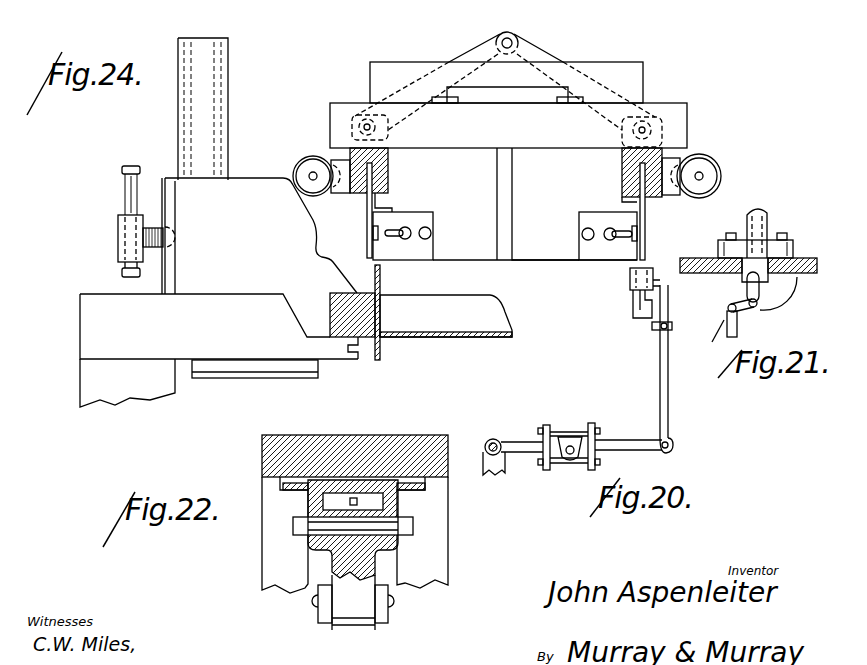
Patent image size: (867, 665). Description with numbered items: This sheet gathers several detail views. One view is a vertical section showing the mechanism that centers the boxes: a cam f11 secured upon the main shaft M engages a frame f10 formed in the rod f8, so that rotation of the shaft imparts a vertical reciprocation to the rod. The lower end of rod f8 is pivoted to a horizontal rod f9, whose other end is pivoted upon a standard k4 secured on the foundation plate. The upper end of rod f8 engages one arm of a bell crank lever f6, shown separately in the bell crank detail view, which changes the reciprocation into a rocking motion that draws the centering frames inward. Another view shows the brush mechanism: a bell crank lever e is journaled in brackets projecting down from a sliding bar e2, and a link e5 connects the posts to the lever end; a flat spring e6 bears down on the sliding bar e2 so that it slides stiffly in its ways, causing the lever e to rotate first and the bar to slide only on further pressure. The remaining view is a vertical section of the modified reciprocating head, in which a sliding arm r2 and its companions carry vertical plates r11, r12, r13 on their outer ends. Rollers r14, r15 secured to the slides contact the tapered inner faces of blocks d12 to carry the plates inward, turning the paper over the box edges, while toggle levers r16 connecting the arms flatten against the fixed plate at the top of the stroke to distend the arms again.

In FIG. 24, the block d12 is at (240, 180).
In FIG. 24, the sliding arm r2 is at (526, 97).
In FIG. 24, the vertical plate r11 is at (367, 212).
In FIG. 24, the vertical plate r12 is at (528, 252).
In FIG. 24, the vertical plate r13 is at (647, 217).
In FIG. 24, the roller r14 is at (311, 153).
In FIG. 24, the roller r15 is at (704, 155).
In FIG. 24, the toggle lever r16 is at (474, 49).
In FIG. 20, the bell crank lever f6 is at (668, 303).
In FIG. 21, the bell crank lever f6 is at (745, 292).
In FIG. 20, the rod f8 is at (668, 372).
In FIG. 20, the horizontal rod f9 is at (613, 441).
In FIG. 20, the frame f10 is at (548, 425).
In FIG. 20, the cam f11 is at (572, 434).
In FIG. 20, the standard k4 is at (489, 436).
In FIG. 20, the main shaft M is at (567, 455).
In FIG. 22, the bell crank lever e is at (374, 568).
In FIG. 22, the sliding bar e2 is at (397, 480).
In FIG. 22, the link e5 is at (320, 609).
In FIG. 22, the flat spring e6 is at (337, 478).